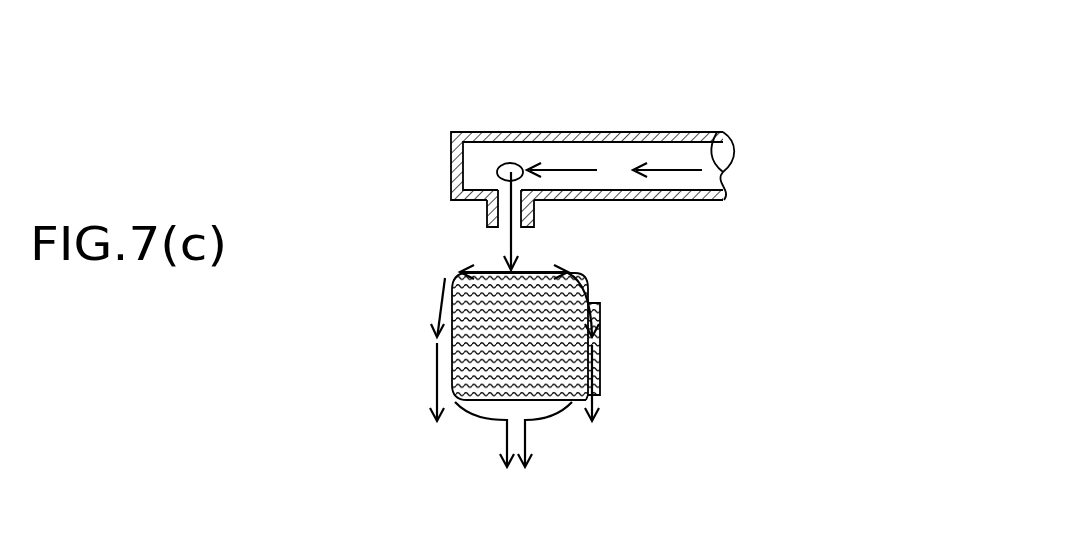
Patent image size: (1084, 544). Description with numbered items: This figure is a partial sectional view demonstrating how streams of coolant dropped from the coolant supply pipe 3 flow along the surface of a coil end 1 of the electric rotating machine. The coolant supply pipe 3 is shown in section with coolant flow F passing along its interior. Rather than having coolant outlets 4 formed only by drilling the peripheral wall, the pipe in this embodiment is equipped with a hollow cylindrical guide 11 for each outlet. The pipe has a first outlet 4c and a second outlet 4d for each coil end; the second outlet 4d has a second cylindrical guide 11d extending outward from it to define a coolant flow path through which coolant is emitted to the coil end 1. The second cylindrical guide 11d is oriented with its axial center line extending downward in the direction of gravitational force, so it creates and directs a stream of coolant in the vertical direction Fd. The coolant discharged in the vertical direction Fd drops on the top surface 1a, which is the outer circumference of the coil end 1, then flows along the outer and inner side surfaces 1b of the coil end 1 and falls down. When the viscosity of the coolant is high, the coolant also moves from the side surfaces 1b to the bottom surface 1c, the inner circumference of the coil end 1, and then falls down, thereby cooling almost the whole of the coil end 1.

The coolant supply pipe 3 is at (410, 150).
The coolant outlet 4 is at (505, 159).
The first outlet 4c is at (503, 165).
The second outlet 4d is at (480, 201).
The hollow cylindrical guide 11 is at (487, 212).
The second cylindrical guide 11d is at (405, 193).
The coolant flow F is at (657, 164).
The vertical direction Fd is at (505, 240).
The coil end 1 is at (512, 384).
The top surface 1a is at (535, 272).
The side surfaces 1b is at (452, 341).
The bottom surface 1c is at (482, 402).